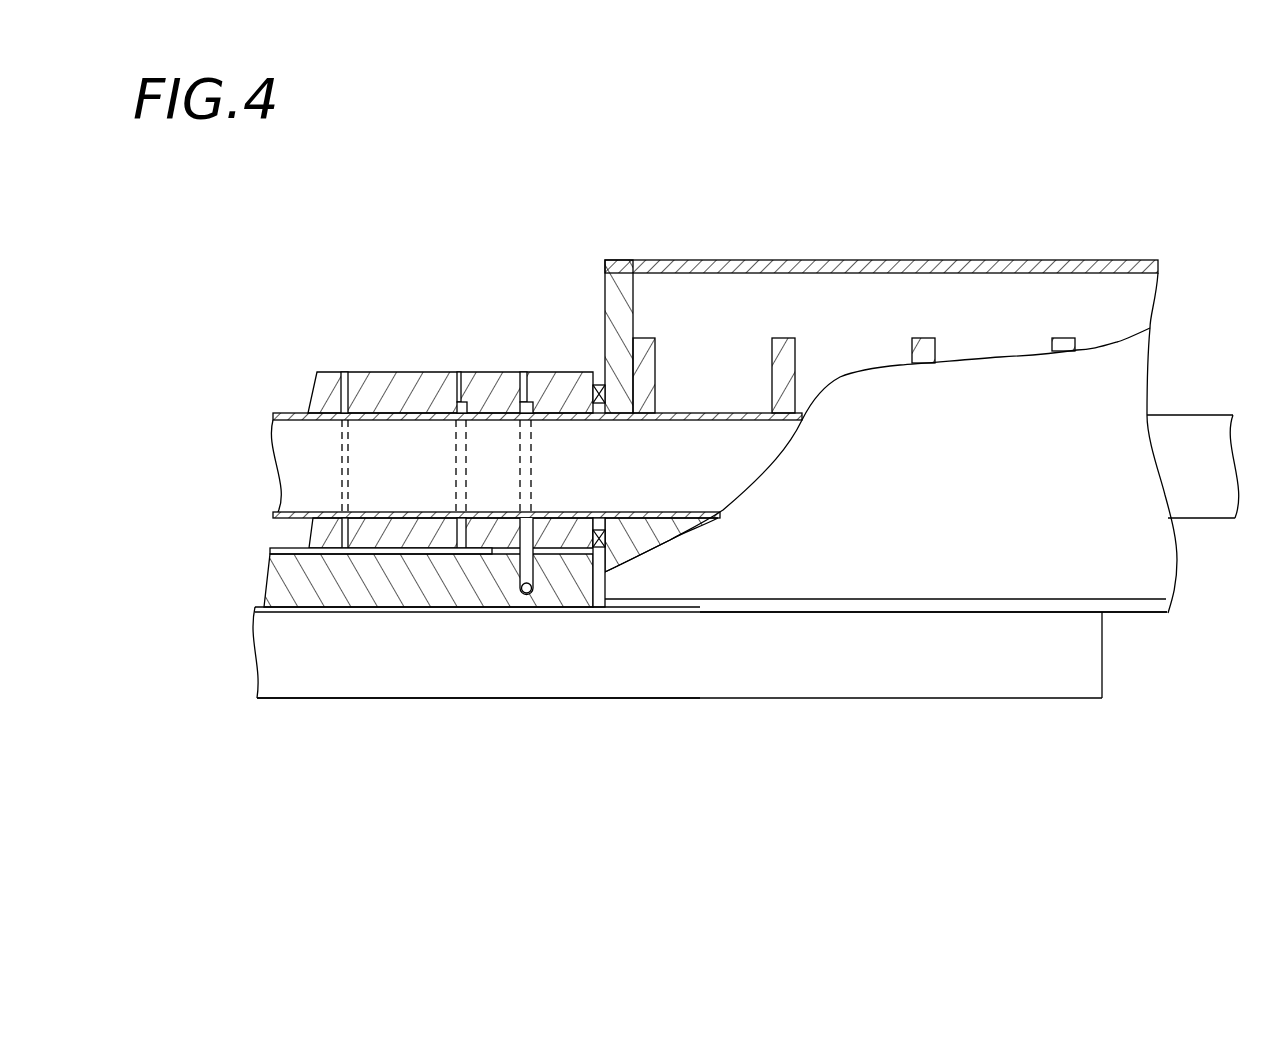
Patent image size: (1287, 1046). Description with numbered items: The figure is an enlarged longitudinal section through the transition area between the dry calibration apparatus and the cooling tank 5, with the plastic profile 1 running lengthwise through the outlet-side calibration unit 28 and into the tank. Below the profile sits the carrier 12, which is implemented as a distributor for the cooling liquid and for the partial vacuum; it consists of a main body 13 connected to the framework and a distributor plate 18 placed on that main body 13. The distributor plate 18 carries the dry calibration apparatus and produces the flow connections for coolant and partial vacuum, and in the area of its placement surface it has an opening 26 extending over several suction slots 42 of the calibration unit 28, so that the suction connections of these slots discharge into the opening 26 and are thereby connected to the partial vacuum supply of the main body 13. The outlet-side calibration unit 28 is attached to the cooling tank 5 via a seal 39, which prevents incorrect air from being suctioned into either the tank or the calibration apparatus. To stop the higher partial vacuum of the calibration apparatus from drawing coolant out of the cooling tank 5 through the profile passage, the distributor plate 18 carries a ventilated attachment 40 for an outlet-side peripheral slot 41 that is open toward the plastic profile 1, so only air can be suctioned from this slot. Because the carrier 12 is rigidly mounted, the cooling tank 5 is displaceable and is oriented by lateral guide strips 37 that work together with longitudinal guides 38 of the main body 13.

The plastic profile 1 is at (1193, 430).
The cooling tank 5 is at (1132, 547).
The carrier 12 is at (463, 715).
The main body 13 is at (815, 653).
The distributor plate 18 is at (570, 600).
The opening 26 is at (330, 551).
The outlet-side calibration unit 28 is at (410, 350).
The lateral guide strip 37 is at (969, 605).
The longitudinal guide 38 is at (403, 612).
The seal 39 is at (607, 390).
The ventilated attachment 40 is at (528, 600).
The outlet-side peripheral slot 41 is at (527, 372).
The suction slots 42 is at (460, 372).